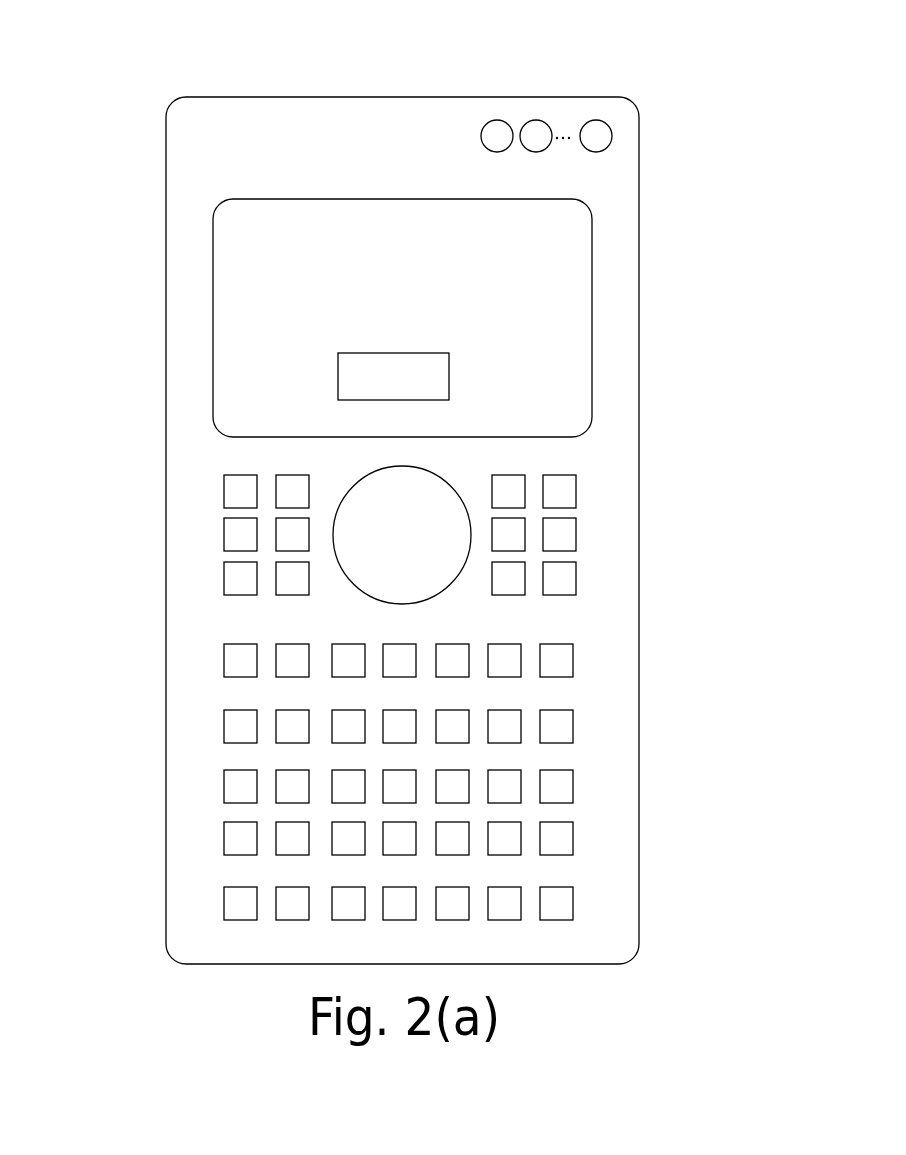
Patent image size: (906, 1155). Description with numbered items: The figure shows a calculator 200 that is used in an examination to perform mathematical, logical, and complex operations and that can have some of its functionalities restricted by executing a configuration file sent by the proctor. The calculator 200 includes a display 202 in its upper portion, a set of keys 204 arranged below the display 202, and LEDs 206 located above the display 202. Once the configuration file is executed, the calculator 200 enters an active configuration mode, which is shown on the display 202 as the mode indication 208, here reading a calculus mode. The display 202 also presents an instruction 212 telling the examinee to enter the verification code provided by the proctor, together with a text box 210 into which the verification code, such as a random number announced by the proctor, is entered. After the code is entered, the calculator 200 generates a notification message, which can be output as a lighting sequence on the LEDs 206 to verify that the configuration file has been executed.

The calculator 200 is at (274, 62).
The display 202 is at (592, 237).
The keys 204 is at (594, 474).
The LEDs 206 is at (485, 110).
The active configuration mode 208 is at (228, 209).
The text box 210 is at (449, 383).
The instruction 212 is at (558, 319).